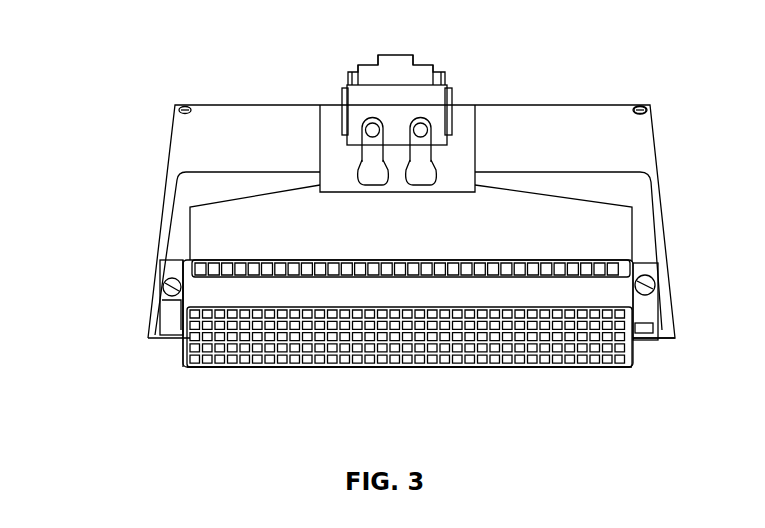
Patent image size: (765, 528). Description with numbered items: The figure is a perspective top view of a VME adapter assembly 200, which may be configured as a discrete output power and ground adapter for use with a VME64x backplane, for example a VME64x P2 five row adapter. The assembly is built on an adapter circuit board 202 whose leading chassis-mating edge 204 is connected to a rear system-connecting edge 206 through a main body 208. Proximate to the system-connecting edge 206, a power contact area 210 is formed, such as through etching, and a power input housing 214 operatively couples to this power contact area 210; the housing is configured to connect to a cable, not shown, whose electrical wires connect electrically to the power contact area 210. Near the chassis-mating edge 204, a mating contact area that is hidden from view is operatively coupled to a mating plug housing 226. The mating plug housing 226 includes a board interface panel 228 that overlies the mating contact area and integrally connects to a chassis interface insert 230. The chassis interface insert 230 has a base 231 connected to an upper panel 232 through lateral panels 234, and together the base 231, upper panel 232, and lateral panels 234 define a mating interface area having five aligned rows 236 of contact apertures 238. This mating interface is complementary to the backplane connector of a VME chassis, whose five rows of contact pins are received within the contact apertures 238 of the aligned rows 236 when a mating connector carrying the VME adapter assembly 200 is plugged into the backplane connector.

The VME adapter assembly 200 is at (110, 40).
The adapter circuit board 202 is at (647, 112).
The chassis-mating edge 204 is at (677, 328).
The system-connecting edge 206 is at (550, 103).
The main body 208 is at (655, 187).
The power contact area 210 is at (465, 112).
The power input housing 214 is at (395, 60).
The mating plug housing 226 is at (185, 348).
The board interface panel 228 is at (195, 258).
The chassis interface insert 230 is at (184, 376).
The base 231 is at (287, 370).
The upper panel 232 is at (620, 292).
The lateral panels 234 is at (182, 345).
The aligned rows 236 is at (608, 360).
The contact apertures 238 is at (552, 358).